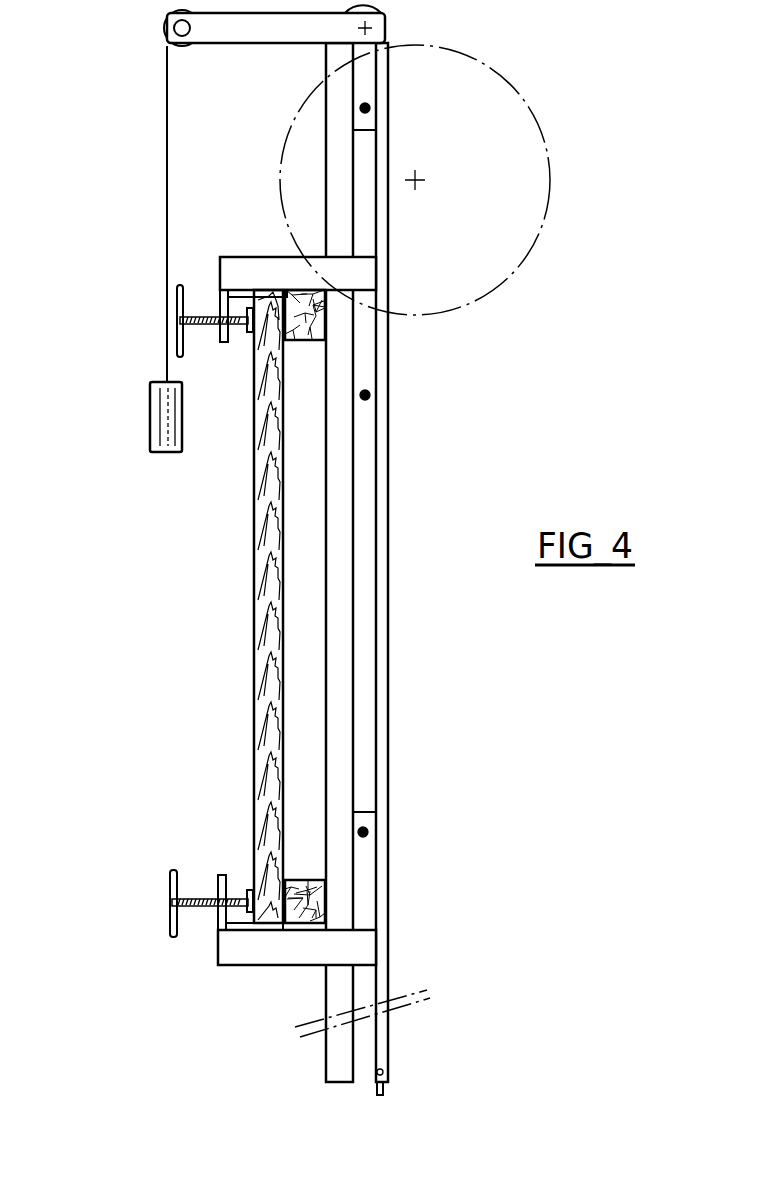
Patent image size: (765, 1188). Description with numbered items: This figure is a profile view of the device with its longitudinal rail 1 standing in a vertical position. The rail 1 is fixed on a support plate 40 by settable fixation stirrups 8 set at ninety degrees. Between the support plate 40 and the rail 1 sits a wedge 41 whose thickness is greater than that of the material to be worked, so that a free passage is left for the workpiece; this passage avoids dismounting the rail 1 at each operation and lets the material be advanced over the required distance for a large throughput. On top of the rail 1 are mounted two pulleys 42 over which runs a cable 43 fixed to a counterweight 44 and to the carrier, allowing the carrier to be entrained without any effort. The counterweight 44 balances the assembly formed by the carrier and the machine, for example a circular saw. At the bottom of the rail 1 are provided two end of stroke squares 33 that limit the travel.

The longitudinal rail 1 is at (327, 110).
The settable fixation stirrups 8 is at (358, 270).
The end of stroke square 33 is at (383, 1090).
The support plate 40 is at (255, 570).
The wedge 41 is at (310, 340).
The pulley 42 is at (162, 22).
The cable 43 is at (167, 192).
The counterweight 44 is at (150, 423).